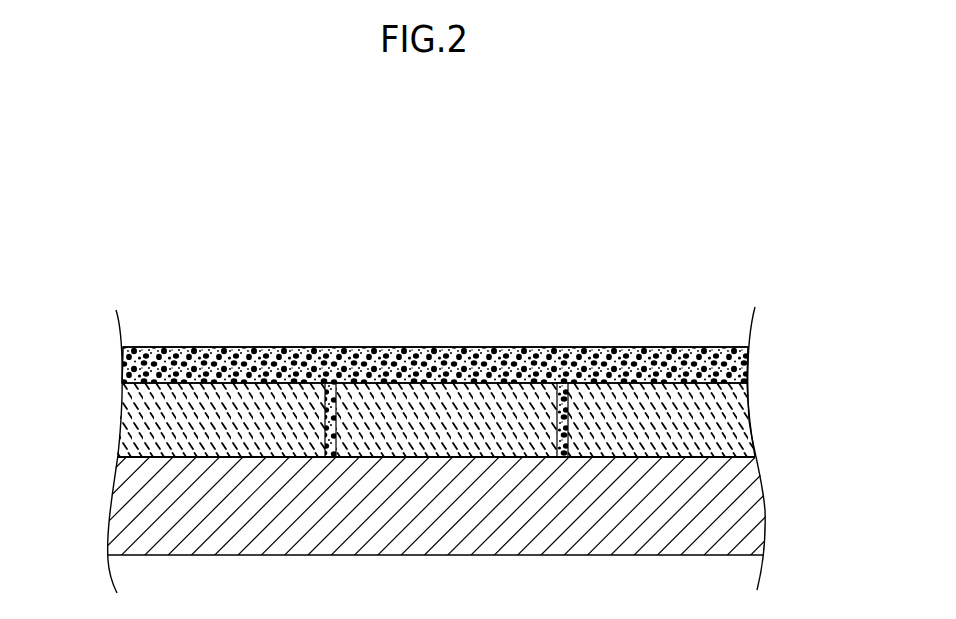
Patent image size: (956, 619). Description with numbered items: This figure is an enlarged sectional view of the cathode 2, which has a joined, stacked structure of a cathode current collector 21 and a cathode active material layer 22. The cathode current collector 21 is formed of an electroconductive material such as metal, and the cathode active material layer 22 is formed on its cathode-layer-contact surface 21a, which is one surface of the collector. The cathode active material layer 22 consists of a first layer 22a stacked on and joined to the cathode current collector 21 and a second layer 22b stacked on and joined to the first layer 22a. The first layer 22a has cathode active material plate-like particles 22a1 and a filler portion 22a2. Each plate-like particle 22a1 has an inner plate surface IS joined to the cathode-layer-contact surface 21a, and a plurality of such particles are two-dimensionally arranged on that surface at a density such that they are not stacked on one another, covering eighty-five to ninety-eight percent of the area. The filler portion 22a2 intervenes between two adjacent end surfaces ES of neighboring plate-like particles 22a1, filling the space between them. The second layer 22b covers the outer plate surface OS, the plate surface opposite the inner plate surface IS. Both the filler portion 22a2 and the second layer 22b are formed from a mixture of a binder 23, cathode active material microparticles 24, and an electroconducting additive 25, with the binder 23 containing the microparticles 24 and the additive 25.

The cathode 2 is at (836, 224).
The cathode current collector 21 is at (117, 522).
The cathode-layer-contact surface 21a is at (757, 453).
The cathode active material layer 22 is at (443, 444).
The first layer 22a is at (125, 421).
The cathode active material plate-like particle 22a1 is at (750, 417).
The filler portion 22a2 is at (567, 457).
The second layer 22b is at (125, 365).
The binder 23 is at (487, 347).
The cathode active material microparticles 24 is at (157, 347).
The electroconducting additive 25 is at (698, 347).
The end surface ES is at (337, 456).
The inner plate surface IS is at (145, 462).
The outer plate surface OS is at (748, 375).